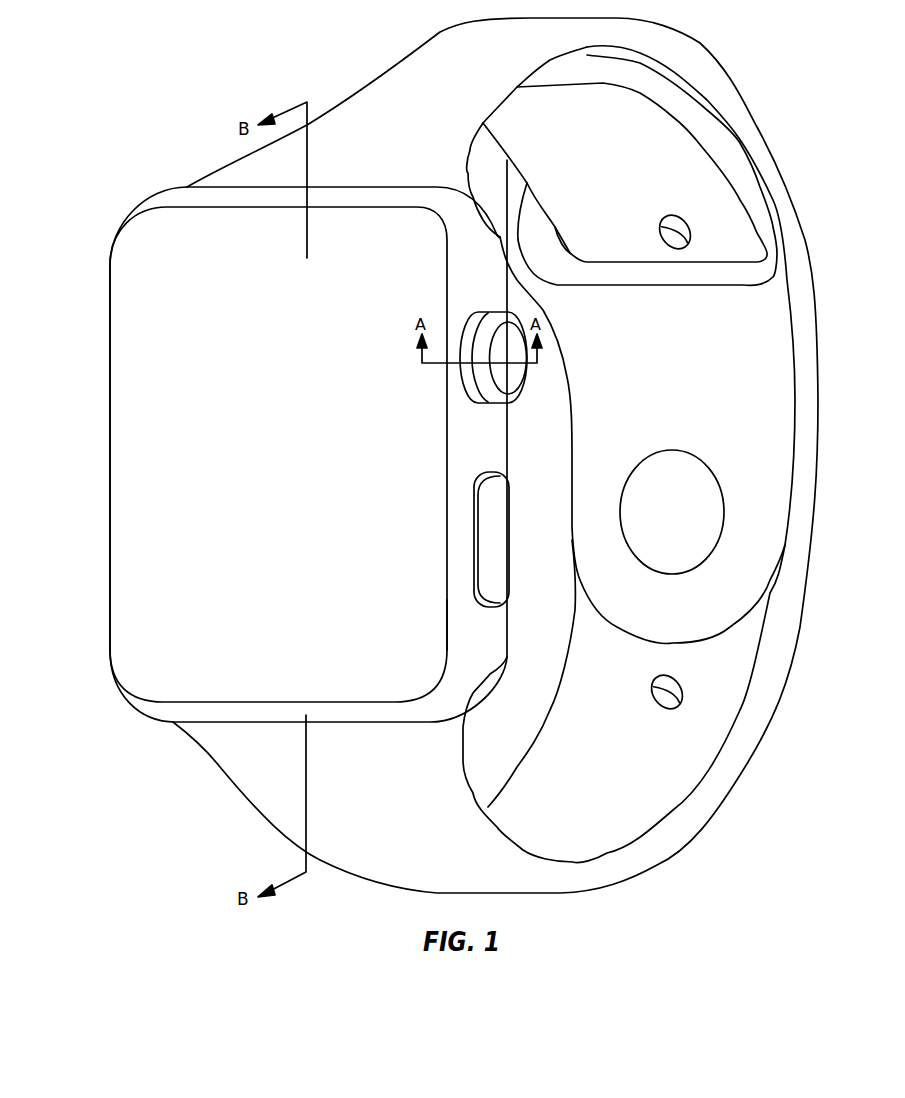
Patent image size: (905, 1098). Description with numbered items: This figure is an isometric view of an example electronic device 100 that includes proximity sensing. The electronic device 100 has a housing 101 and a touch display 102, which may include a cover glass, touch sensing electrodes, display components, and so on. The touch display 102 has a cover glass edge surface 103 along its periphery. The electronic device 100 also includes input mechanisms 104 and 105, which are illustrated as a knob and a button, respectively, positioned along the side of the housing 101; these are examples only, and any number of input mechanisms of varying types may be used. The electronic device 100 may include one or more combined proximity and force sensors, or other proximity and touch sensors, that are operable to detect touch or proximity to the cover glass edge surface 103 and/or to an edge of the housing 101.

The electronic device 100 is at (103, 798).
The housing 101 is at (138, 710).
The touch display 102 is at (109, 597).
The cover glass edge surface 103 is at (447, 637).
The input mechanism 104 is at (522, 387).
The input mechanism 105 is at (510, 584).